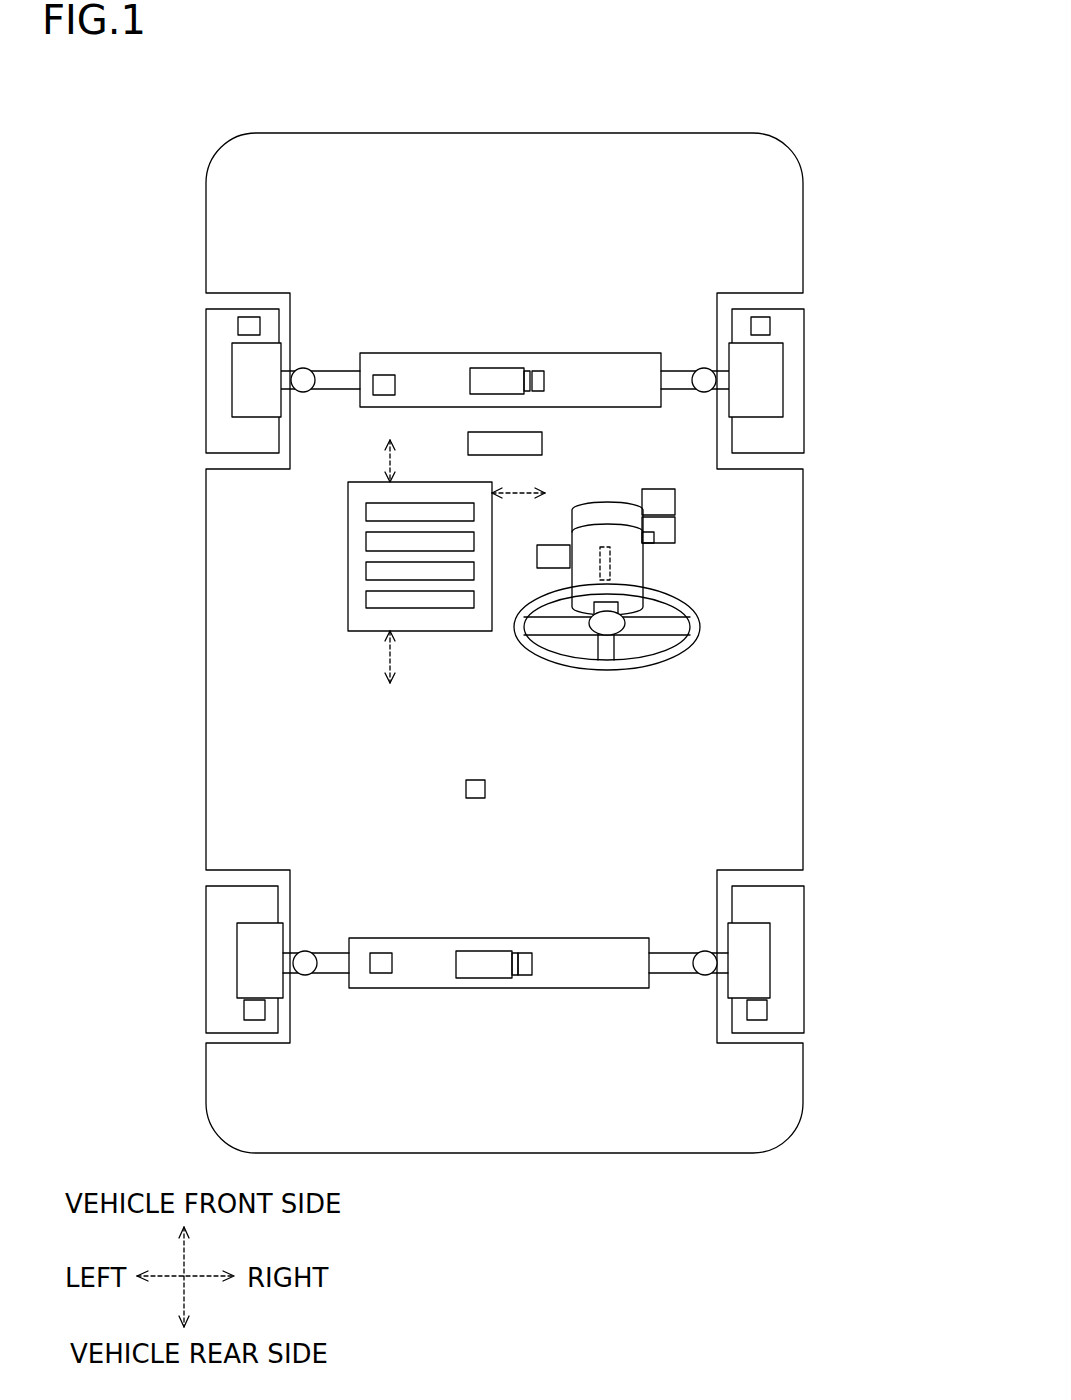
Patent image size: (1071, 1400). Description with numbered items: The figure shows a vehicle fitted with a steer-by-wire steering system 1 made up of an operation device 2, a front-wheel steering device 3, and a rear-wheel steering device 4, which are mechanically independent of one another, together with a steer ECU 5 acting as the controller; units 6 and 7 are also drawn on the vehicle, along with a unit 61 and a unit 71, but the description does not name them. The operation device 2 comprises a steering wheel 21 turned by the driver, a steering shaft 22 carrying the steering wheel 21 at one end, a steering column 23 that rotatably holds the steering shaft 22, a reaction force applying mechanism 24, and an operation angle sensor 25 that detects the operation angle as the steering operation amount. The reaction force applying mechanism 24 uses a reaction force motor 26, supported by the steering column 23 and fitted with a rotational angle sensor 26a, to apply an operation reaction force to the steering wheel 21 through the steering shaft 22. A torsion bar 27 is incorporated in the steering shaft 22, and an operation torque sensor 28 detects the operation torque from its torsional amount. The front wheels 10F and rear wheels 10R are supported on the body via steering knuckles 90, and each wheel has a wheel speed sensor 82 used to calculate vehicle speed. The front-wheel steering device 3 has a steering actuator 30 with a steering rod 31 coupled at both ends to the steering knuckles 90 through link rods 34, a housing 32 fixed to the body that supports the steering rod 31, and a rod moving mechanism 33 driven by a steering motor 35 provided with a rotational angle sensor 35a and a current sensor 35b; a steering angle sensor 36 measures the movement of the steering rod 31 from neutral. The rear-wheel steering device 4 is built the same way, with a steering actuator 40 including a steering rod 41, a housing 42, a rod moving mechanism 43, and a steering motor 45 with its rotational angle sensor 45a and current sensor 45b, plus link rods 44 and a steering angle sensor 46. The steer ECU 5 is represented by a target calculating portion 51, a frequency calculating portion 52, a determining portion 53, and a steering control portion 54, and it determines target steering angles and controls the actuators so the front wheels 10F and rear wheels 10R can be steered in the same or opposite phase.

The steering system 1 is at (160, 107).
The operation device 2 is at (712, 612).
The front-wheel steering device 3 is at (300, 218).
The rear-wheel steering device 4 is at (328, 862).
The steer ECU 5 is at (348, 490).
The vehicle speed sensor unit 6 is at (466, 765).
The yaw rate sensor unit 7 is at (465, 440).
The front wheels 10F is at (206, 376).
The rear wheels 10R is at (206, 890).
The steering wheel 21 is at (660, 660).
The steering shaft 22 is at (630, 625).
The steering column 23 is at (630, 565).
The reaction force applying mechanism 24 is at (605, 515).
The operation angle sensor 25 is at (670, 502).
The reaction force motor 26 is at (668, 532).
The rotational angle sensor 26a is at (650, 545).
The torsion bar 27 is at (597, 565).
The operation torque sensor 28 is at (562, 550).
The steering actuator 30 is at (415, 275).
The steering rod 31 is at (322, 378).
The housing 32 is at (586, 362).
The rod moving mechanism 33 is at (590, 400).
The link rods 34 is at (286, 372).
The steering motor 35 is at (495, 368).
The rotational angle sensor 35a is at (527, 371).
The current sensor 35b is at (539, 371).
The steering angle sensor 36 is at (384, 376).
The steering actuator 40 is at (400, 938).
The steering rod 41 is at (330, 965).
The housing 42 is at (607, 948).
The rod moving mechanism 43 is at (575, 975).
The link rods 44 is at (292, 962).
The steering motor 45 is at (478, 957).
The rotational angle sensor 45a is at (515, 953).
The current sensor 45b is at (525, 953).
The steering angle sensor 46 is at (380, 965).
The target calculating portion 51 is at (372, 512).
The frequency calculating portion 52 is at (372, 541).
The determining portion 53 is at (372, 571).
The steering control portion 54 is at (372, 600).
The vehicle speed sensor 61 is at (468, 800).
The yaw rate sensor 71 is at (542, 446).
The wheel speed sensors 82 is at (240, 326).
The steering knuckles 90 is at (232, 360).